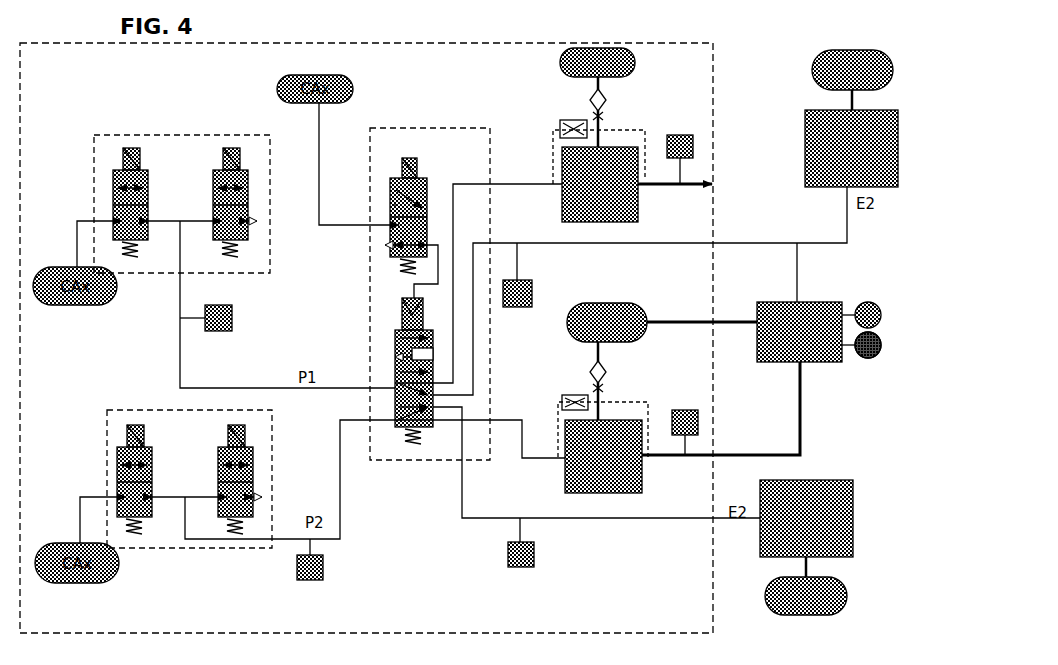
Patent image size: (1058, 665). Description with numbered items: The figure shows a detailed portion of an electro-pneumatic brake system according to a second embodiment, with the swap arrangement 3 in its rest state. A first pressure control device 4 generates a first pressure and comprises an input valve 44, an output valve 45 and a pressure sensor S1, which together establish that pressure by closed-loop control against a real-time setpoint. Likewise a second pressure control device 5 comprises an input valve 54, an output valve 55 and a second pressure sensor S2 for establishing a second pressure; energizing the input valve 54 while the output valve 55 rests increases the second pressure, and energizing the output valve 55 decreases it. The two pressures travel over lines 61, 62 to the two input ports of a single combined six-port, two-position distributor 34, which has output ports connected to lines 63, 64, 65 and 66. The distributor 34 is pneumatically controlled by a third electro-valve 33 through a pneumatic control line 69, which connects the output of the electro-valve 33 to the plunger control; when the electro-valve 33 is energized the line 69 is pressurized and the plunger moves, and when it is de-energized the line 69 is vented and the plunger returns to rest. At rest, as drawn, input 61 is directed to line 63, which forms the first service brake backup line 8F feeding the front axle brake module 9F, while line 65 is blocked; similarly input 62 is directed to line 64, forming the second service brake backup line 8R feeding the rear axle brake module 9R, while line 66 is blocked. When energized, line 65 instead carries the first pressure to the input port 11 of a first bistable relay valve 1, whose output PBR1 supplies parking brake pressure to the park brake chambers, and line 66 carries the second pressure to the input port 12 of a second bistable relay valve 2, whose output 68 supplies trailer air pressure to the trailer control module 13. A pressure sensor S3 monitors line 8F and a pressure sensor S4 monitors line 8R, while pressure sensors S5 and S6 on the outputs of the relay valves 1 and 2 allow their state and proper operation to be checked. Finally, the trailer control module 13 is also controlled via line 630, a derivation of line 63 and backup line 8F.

The first bistable relay valve 1 is at (597, 139).
The second bistable relay valve 2 is at (606, 403).
The swap arrangement 3 is at (438, 126).
The first pressure control device 4 is at (173, 134).
The second pressure control device 5 is at (116, 405).
The input port 11 is at (562, 184).
The input port 12 is at (565, 462).
The trailer control module 13 is at (815, 297).
The third electro-valve 33 is at (430, 170).
The single combined 6/2 distributor 34 is at (392, 319).
The input valve 44 is at (98, 178).
The output valve 45 is at (260, 178).
The input valve 54 is at (112, 445).
The output valve 55 is at (262, 446).
The line 61 is at (180, 286).
The line 62 is at (203, 545).
The line 63 is at (640, 291).
The line 64 is at (611, 469).
The line 65 is at (497, 283).
The line 66 is at (499, 428).
The output of the second bistable relay valve 68 is at (802, 418).
The pneumatic control line 69 is at (415, 271).
The line 630 is at (797, 285).
The first service brake backup line 8F is at (638, 244).
The second service brake backup line 8R is at (618, 520).
The front axle brake module 9F is at (804, 108).
The rear axle brake module 9R is at (862, 490).
The pressure sensor S1 is at (232, 306).
The second pressure sensor S2 is at (297, 575).
The pressure sensor S3 is at (532, 290).
The pressure sensor S4 is at (534, 557).
The pressure sensor S5 is at (683, 135).
The pressure sensor S6 is at (677, 410).
The output of the first bistable relay valve PBR1 is at (696, 183).